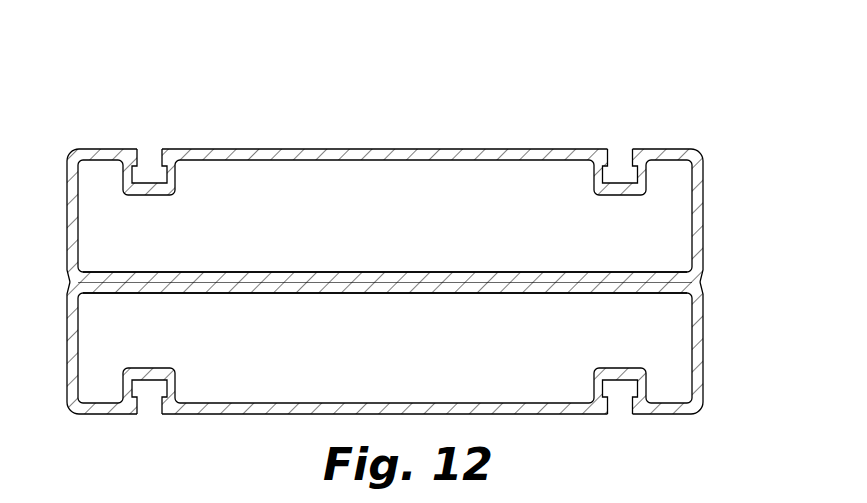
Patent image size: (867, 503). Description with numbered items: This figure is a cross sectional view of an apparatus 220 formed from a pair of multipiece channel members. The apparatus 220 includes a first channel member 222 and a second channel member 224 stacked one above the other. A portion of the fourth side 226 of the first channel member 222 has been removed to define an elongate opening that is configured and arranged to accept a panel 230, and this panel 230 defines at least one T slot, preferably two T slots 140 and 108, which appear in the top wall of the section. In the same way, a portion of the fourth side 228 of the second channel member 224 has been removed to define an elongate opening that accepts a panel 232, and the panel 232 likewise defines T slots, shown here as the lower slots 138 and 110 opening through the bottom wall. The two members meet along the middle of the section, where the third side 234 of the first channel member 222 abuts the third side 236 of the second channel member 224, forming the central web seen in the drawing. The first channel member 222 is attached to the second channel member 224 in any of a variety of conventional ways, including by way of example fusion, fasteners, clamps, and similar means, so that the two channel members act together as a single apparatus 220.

The apparatus 220 is at (129, 90).
The first channel member 222 is at (703, 230).
The second channel member 224 is at (703, 360).
The fourth side 226 is at (655, 149).
The fourth side 228 is at (673, 414).
The panel 230 is at (433, 149).
The panel 232 is at (258, 414).
The third side 234 is at (290, 272).
The third side 236 is at (305, 293).
The T slot 140 is at (156, 178).
The T slot 108 is at (622, 176).
The lower left T-slot 138 is at (152, 386).
The lower right T-slot 110 is at (620, 394).